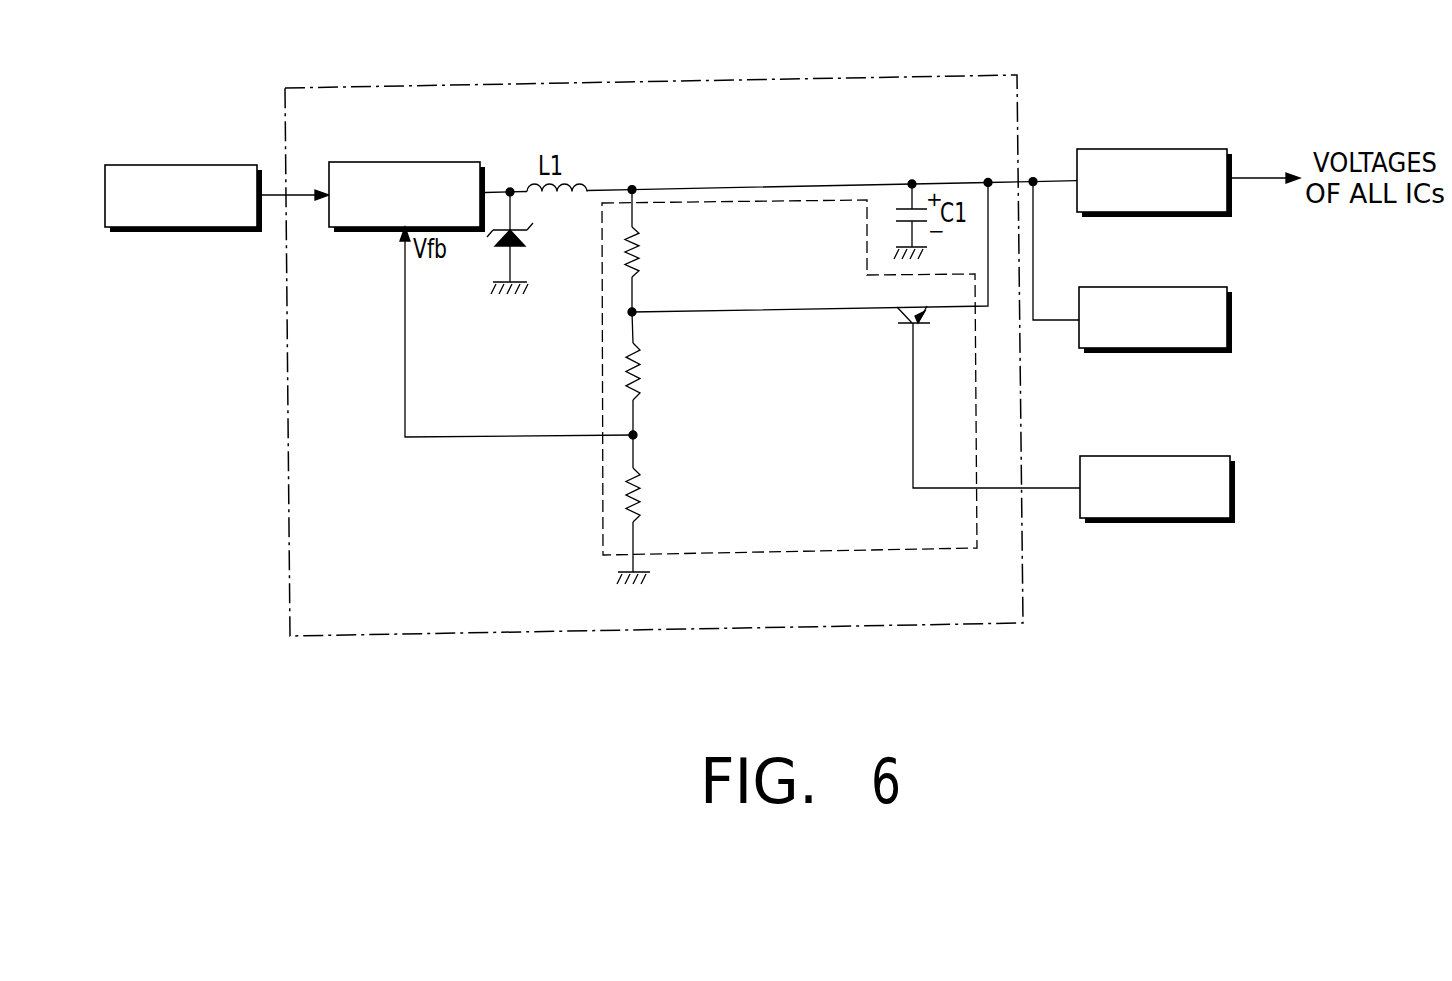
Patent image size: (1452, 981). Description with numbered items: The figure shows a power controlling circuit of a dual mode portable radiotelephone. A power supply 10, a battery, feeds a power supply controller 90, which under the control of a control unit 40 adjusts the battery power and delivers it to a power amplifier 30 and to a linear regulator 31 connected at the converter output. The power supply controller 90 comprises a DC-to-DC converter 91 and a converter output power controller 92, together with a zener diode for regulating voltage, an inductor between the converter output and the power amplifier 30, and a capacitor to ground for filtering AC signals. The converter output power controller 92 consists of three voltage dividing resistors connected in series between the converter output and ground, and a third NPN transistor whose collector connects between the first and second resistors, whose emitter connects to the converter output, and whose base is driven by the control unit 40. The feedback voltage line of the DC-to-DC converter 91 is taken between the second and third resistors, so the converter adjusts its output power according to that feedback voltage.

The power supply 10 is at (178, 165).
The power supply controller 90 is at (877, 75).
The DC-to-DC converter 91 is at (400, 162).
The converter output power controller 92 is at (727, 555).
The linear regulator 31 is at (1149, 149).
The power amplifier 30 is at (1150, 287).
The control unit 40 is at (1153, 456).